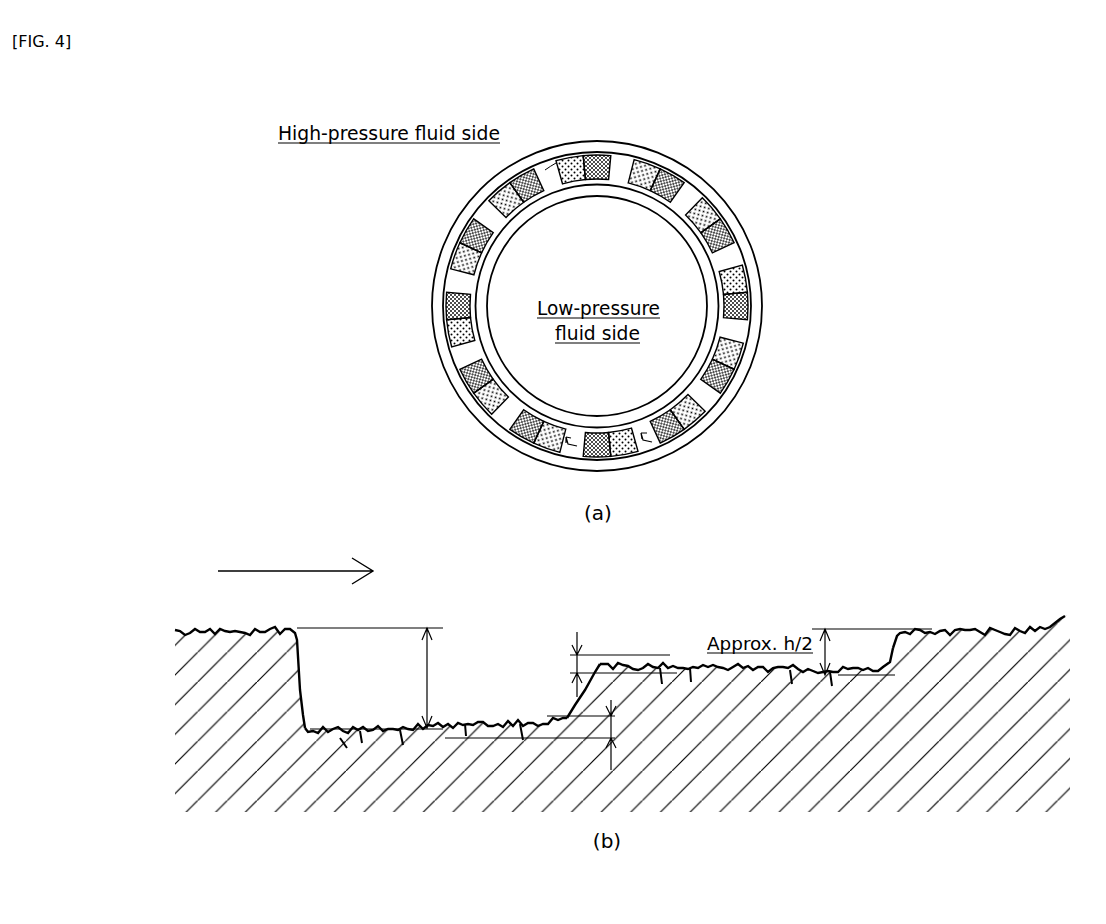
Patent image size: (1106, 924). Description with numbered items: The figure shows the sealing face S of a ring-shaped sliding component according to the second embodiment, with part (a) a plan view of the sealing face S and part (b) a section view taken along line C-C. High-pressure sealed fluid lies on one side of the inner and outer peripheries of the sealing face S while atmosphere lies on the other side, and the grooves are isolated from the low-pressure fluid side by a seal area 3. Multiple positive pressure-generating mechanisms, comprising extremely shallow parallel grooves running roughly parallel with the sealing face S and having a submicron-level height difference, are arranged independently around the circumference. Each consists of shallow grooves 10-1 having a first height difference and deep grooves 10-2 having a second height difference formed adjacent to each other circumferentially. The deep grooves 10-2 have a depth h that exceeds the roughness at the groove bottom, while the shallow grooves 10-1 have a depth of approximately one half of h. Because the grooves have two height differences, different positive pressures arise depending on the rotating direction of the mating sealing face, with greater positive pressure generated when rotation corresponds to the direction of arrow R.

The seal area 3 is at (587, 180).
The shallow grooves 10-1 is at (697, 662).
The deep grooves 10-2 is at (471, 717).
The sealing face S is at (550, 175).
The section line C- C is at (563, 447).
The arrow indicating rotating direction R is at (295, 563).
The groove depth h is at (371, 678).
The shallow groove depth a is at (613, 664).